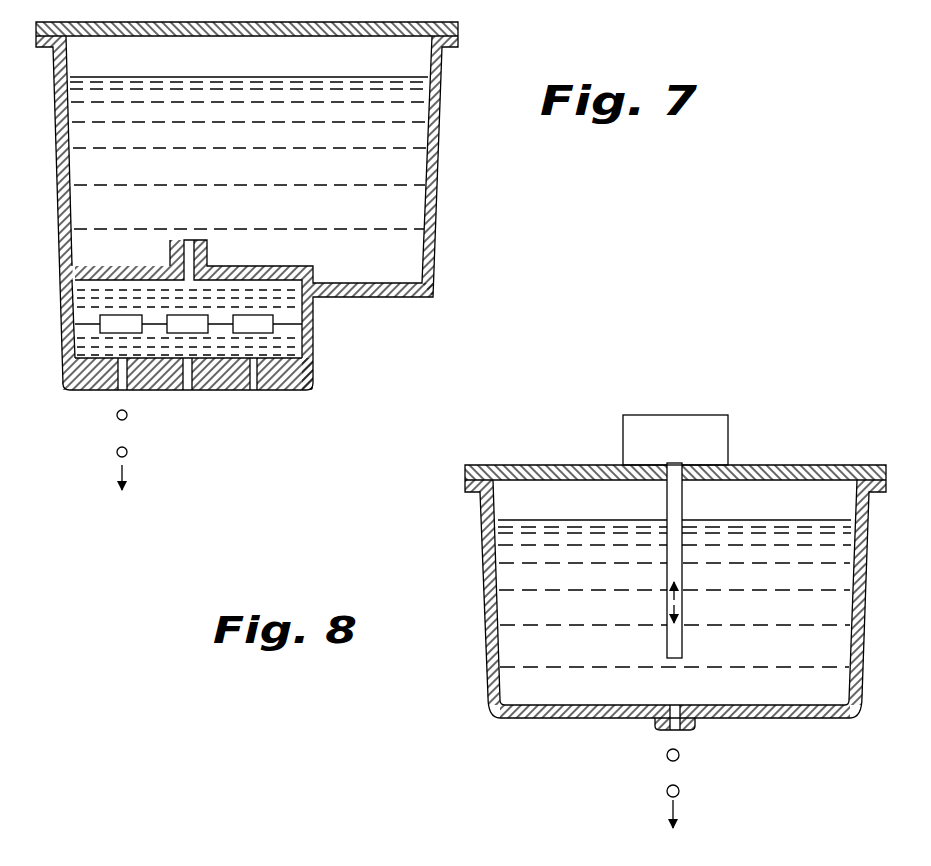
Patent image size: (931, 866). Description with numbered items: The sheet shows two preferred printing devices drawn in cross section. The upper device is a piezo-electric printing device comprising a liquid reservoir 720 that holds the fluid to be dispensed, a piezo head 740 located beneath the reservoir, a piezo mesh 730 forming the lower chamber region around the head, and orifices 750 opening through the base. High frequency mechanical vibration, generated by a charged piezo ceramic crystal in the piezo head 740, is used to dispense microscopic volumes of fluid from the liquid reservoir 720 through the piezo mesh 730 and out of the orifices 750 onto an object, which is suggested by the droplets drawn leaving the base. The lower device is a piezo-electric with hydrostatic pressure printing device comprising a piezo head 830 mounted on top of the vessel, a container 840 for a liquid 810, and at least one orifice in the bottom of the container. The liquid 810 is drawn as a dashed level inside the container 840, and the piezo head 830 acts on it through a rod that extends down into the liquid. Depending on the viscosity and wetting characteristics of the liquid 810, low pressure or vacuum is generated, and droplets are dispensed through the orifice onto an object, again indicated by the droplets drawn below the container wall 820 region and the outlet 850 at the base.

In FIG. 7, the liquid reservoir 720 is at (438, 172).
In FIG. 7, the piezo mesh 730 is at (280, 337).
In FIG. 7, the piezo head 740 is at (255, 315).
In FIG. 7, the orifices 750 is at (120, 392).
In FIG. 8, the liquid 810 is at (515, 603).
In FIG. 8, the container wall 820 is at (505, 500).
In FIG. 8, the piezo head 830 is at (708, 435).
In FIG. 8, the container 840 is at (492, 693).
In FIG. 8, the outlet 850 is at (672, 732).